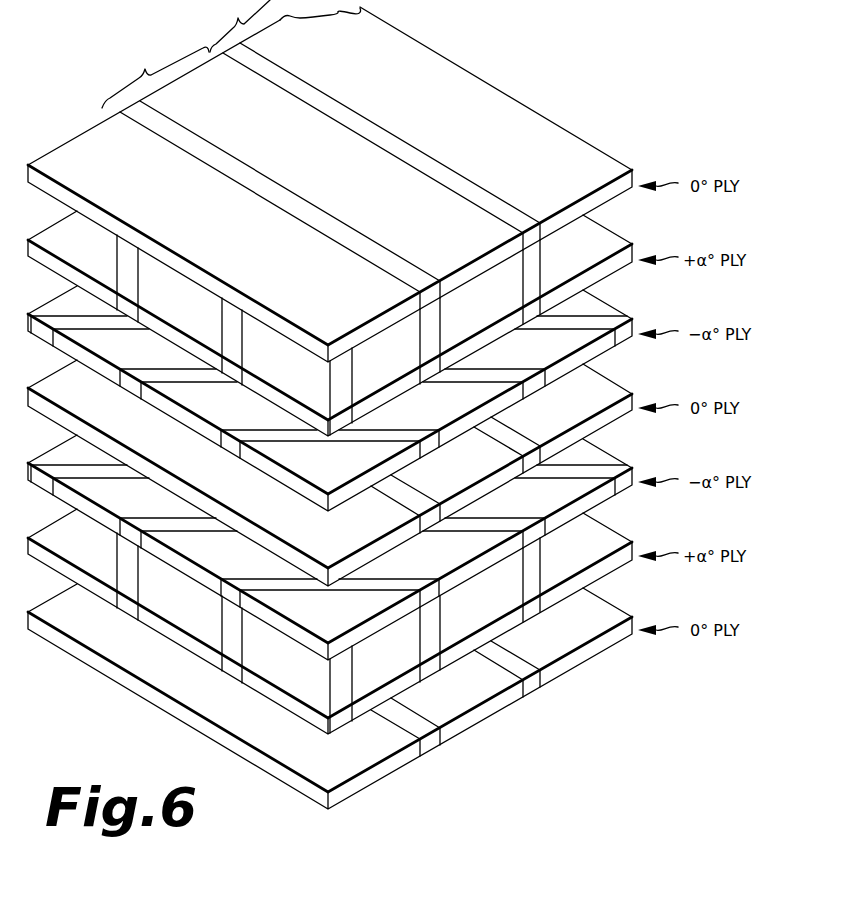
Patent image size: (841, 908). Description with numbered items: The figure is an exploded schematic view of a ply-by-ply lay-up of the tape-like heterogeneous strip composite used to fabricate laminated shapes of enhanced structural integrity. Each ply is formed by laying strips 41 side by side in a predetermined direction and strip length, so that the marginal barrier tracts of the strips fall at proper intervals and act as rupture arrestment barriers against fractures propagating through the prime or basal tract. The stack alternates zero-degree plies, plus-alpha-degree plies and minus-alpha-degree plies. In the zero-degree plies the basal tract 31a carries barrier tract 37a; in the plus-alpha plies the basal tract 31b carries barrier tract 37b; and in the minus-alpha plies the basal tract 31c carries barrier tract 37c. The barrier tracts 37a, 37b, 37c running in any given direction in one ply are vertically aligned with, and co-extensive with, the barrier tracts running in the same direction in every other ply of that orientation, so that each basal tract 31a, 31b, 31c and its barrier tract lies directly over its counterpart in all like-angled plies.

The basal tract 31a is at (357, 62).
The basal tract 31b is at (399, 365).
The basal tract 31c is at (426, 418).
The barrier tract 37a is at (357, 129).
The barrier tract 37b is at (547, 274).
The barrier tract 37c is at (498, 375).
The strip 41 is at (237, 20).